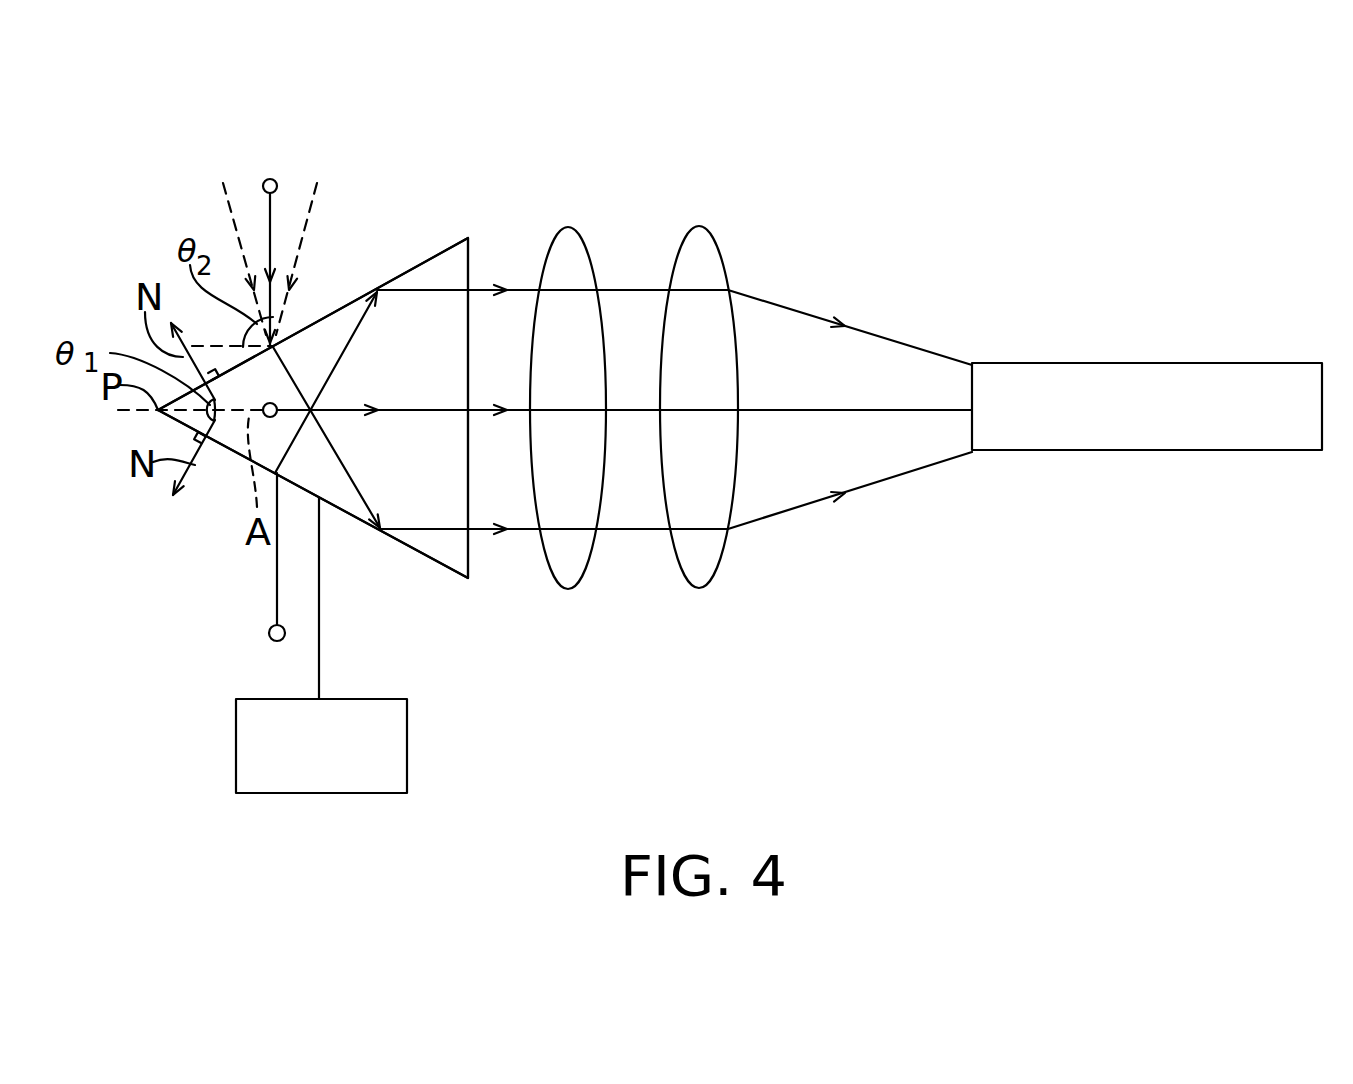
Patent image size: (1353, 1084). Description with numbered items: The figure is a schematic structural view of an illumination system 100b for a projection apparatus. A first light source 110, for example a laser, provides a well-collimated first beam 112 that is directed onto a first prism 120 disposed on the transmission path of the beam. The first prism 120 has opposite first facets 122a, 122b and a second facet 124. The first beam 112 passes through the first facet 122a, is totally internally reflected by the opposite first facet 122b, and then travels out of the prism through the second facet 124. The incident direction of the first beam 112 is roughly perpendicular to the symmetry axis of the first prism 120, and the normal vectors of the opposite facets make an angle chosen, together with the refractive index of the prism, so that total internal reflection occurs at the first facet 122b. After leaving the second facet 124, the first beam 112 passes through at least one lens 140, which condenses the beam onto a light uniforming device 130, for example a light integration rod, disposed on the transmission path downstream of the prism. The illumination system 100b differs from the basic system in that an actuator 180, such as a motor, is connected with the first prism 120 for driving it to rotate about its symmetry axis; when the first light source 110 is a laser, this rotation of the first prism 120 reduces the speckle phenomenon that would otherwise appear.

The illumination system 100b is at (1327, 643).
The first light source 110 is at (278, 186).
The first beam 112 is at (270, 210).
The first prism 120 is at (232, 440).
The first facet 122a is at (347, 303).
The first facet 122b is at (347, 514).
The second facet 124 is at (472, 560).
The light uniforming device 130 is at (1148, 377).
The lens 140 is at (580, 558).
The actuator 180 is at (407, 742).